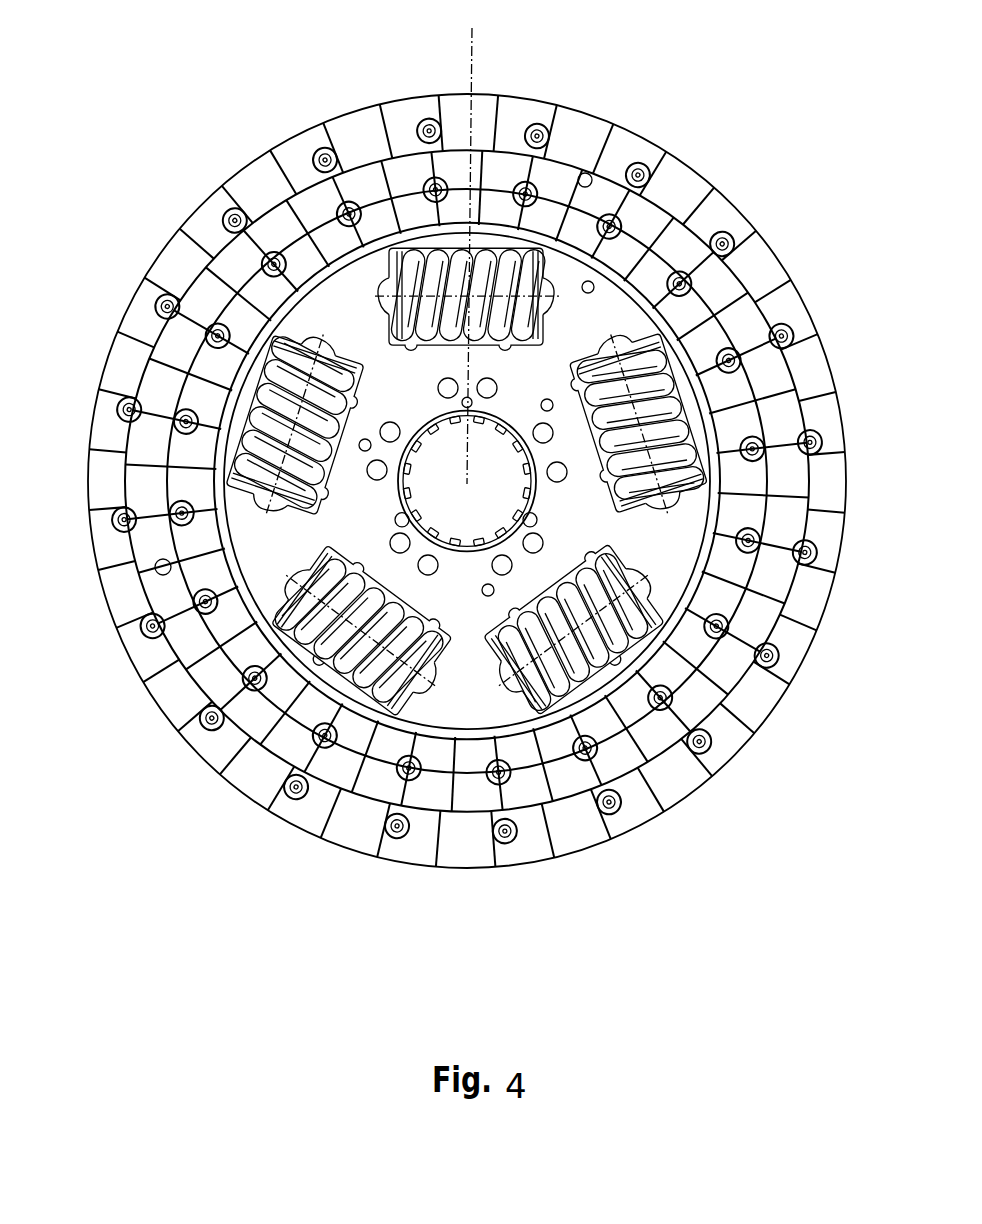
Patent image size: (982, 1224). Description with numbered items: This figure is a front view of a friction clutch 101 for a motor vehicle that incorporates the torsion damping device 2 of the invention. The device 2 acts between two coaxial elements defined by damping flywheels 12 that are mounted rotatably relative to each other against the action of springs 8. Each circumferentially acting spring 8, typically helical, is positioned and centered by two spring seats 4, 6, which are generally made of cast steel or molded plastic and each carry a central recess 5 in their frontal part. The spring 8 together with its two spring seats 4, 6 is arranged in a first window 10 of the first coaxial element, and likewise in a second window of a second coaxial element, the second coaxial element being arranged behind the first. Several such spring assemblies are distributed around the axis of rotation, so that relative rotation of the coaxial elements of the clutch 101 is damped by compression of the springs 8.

The friction clutch 101 is at (660, 100).
The torsion damping device 2 is at (247, 428).
The damping flywheel 12 is at (607, 305).
The spring 8 is at (323, 645).
The spring seat 4 is at (406, 680).
The spring seat 6 is at (283, 608).
The first window 10 is at (343, 675).
The central recess 5 is at (472, 30).